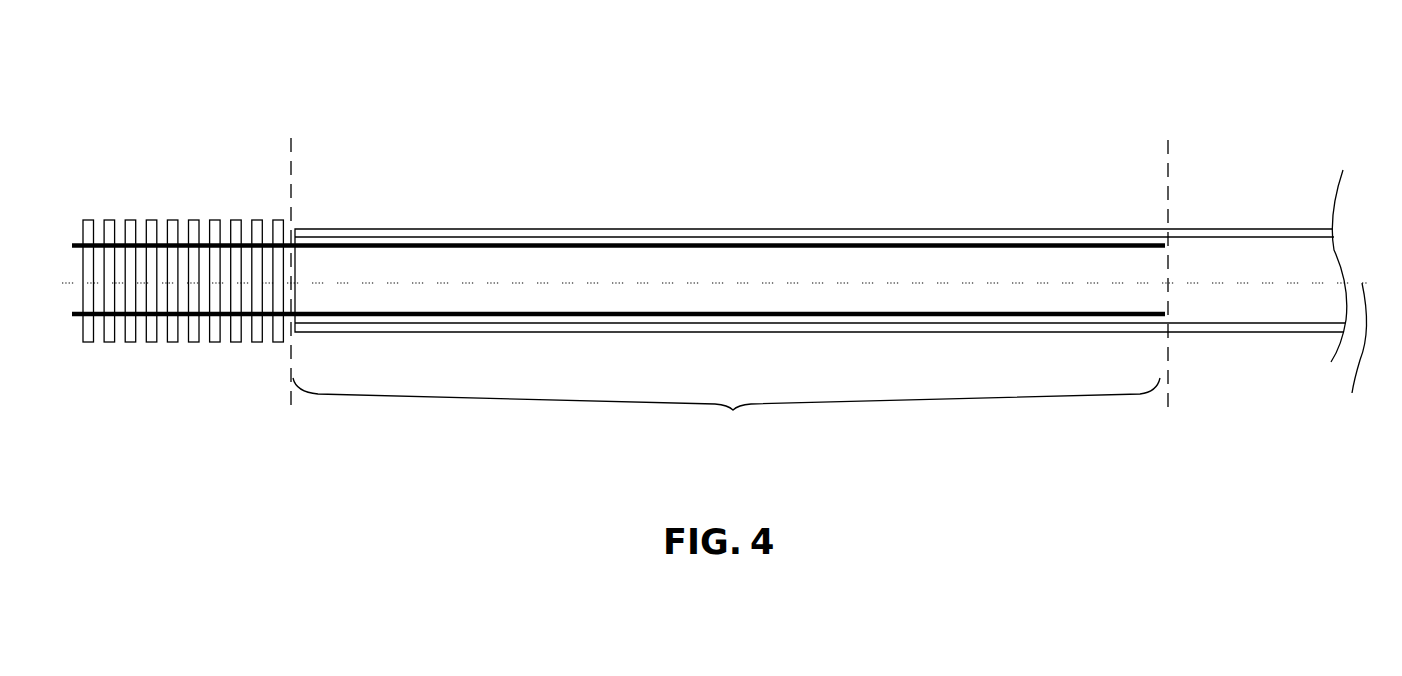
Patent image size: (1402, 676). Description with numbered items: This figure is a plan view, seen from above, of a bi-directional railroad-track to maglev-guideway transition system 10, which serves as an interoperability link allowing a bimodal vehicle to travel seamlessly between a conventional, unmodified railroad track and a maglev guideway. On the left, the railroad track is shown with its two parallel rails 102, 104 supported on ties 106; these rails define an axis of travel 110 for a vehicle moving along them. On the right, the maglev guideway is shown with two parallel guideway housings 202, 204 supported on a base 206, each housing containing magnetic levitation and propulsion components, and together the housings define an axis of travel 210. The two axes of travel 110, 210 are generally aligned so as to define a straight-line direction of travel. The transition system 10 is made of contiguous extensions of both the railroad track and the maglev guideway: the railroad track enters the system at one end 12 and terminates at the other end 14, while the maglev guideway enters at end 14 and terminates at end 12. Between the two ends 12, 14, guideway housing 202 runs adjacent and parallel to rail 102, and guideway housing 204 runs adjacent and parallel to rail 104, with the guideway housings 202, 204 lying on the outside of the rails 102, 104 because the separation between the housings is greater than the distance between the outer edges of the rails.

The transition system 10 is at (733, 413).
The end 12 is at (290, 172).
The end 14 is at (1167, 172).
The rail 102 is at (205, 313).
The rail 104 is at (158, 243).
The ties 106 is at (109, 302).
The axis of travel 110 is at (65, 283).
The guideway housing 202 is at (695, 325).
The guideway housing 204 is at (730, 232).
The base 206 is at (625, 267).
The axis of travel 210 is at (1352, 285).